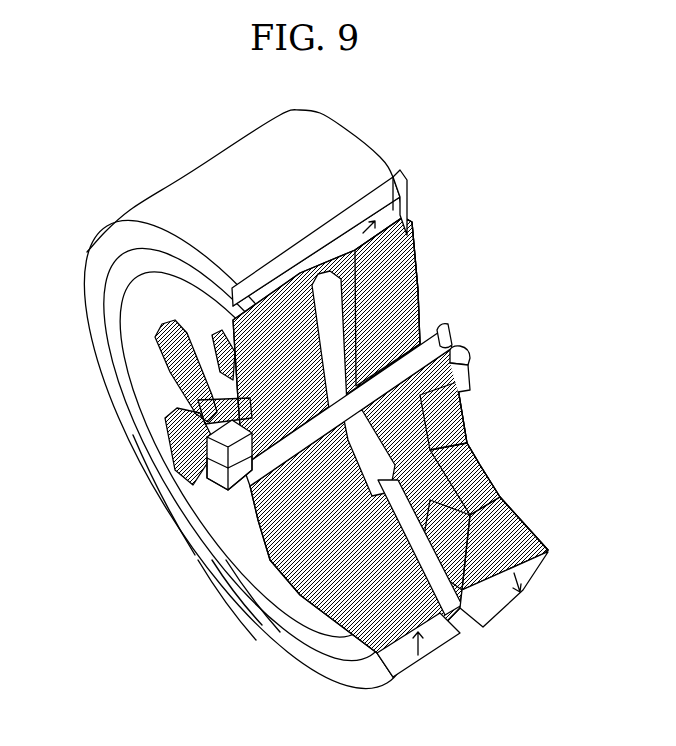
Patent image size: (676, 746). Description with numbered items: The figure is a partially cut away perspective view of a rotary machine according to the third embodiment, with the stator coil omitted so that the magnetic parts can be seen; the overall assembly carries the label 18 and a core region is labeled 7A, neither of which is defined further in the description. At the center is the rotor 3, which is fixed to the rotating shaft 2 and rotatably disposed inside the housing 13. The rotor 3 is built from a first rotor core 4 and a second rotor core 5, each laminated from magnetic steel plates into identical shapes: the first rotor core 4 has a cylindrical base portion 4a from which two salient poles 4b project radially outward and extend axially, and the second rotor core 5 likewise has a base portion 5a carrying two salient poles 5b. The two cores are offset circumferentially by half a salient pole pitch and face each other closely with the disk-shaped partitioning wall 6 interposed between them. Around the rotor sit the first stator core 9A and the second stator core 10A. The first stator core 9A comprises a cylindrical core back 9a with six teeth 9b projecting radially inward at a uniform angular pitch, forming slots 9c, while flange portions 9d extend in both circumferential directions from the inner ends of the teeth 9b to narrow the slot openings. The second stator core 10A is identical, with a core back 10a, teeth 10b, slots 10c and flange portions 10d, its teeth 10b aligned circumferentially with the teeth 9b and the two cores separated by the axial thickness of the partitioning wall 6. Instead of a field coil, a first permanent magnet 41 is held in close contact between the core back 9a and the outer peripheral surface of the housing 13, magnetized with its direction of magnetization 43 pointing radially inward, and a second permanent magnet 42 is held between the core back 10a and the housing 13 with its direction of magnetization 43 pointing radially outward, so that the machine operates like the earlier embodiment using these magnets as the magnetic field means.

The motor 18 is at (62, 90).
The housing 13 is at (85, 252).
The first permanent magnet 41 is at (116, 294).
The first stator core 9A is at (137, 363).
The core back 9a is at (187, 550).
The teeth 9b is at (237, 627).
The slots 9c is at (243, 617).
The flange portions 9d is at (228, 590).
The direction of magnetization 43 is at (233, 330).
The second permanent magnet 42 is at (410, 197).
The second stator core 10A is at (408, 232).
The stator core 7A is at (417, 267).
The rotor 3 is at (450, 323).
The rotating shaft 2 is at (467, 352).
The second rotor core 5 is at (501, 367).
The base portion 5a is at (460, 392).
The salient poles 5b is at (466, 366).
The partitioning wall 6 is at (463, 408).
The core back 10a is at (533, 520).
The teeth 10b is at (493, 457).
The slots 10c is at (505, 500).
The flange portions 10d is at (472, 431).
The first rotor core 4 is at (147, 457).
The base portion 4a is at (175, 465).
The salient poles 4b is at (173, 438).